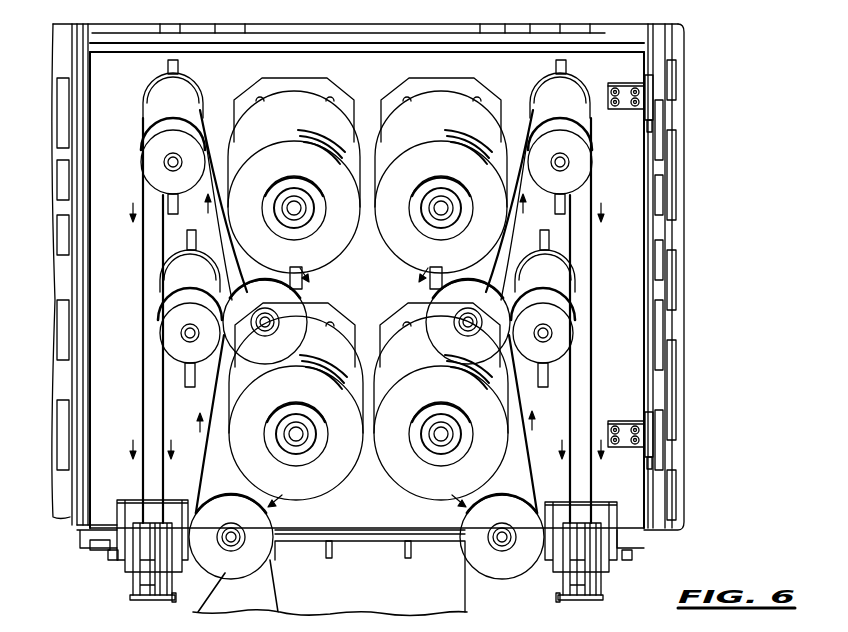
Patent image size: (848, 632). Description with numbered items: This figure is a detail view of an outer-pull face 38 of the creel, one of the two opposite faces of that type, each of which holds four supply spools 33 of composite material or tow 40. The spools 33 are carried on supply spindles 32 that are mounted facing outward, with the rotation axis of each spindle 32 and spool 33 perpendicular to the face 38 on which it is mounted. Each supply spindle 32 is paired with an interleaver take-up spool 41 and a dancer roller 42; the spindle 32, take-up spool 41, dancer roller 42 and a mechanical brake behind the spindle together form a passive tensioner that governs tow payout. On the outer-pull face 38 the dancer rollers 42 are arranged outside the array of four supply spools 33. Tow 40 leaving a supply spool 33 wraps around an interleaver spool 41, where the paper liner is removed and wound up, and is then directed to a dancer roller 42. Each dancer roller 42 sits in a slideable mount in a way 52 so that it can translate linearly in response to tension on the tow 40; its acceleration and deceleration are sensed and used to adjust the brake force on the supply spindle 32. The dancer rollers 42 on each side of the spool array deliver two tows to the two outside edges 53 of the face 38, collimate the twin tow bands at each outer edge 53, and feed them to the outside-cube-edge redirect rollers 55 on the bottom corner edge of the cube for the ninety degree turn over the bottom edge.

The supply spindle 32 is at (297, 210).
The supply spool 33 is at (250, 172).
The outer-pull face 38 is at (618, 146).
The tow 40 is at (595, 308).
The interleaver take-up spool 41 is at (257, 272).
The dancer roller 42 is at (160, 127).
The way 52 is at (168, 67).
The outside edge 53 is at (617, 237).
The outside-cube-edge redirect roller 55 is at (124, 585).